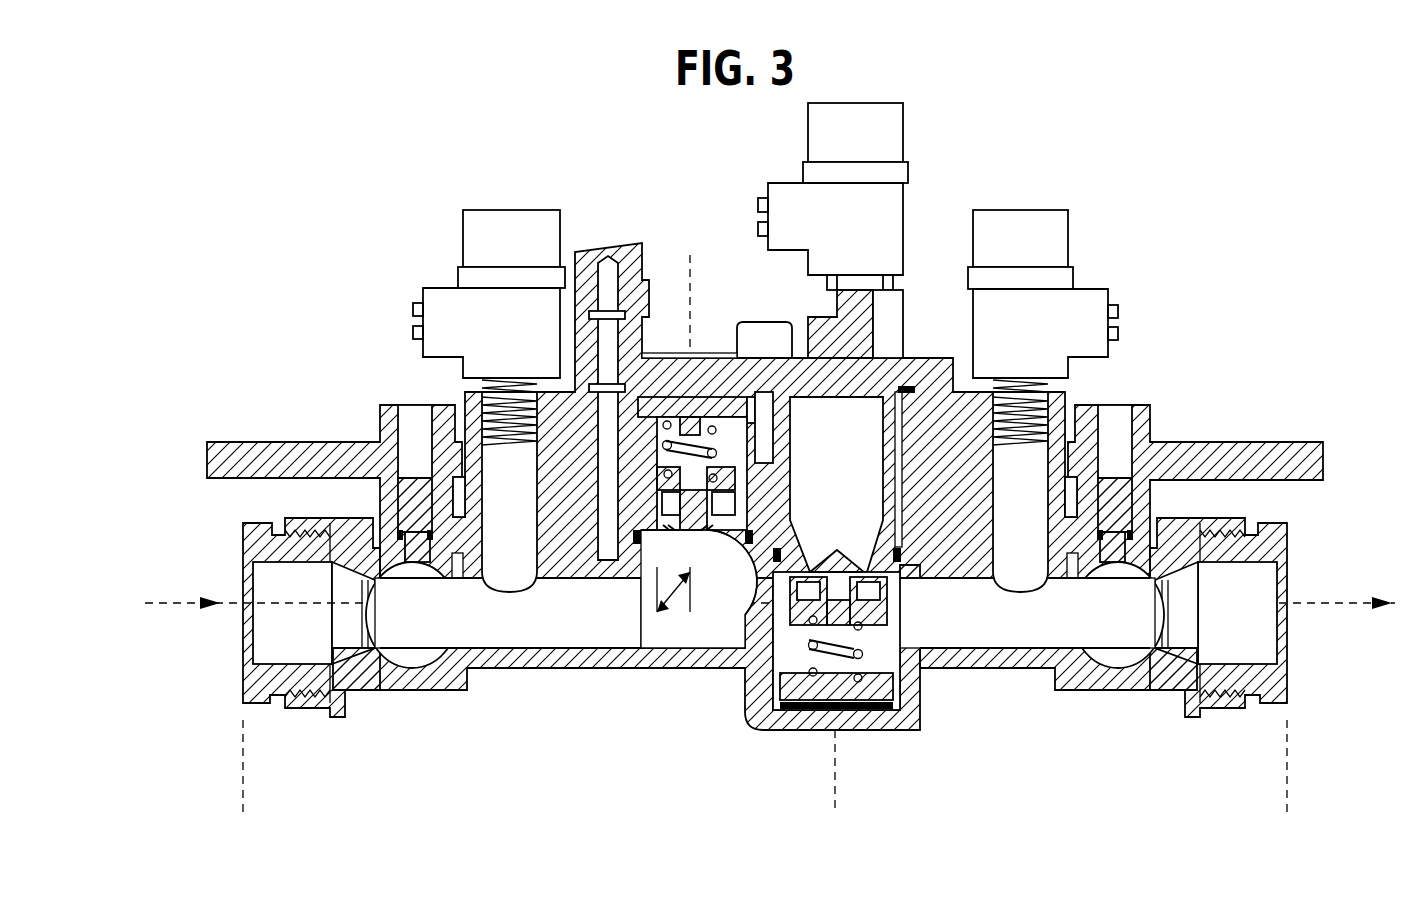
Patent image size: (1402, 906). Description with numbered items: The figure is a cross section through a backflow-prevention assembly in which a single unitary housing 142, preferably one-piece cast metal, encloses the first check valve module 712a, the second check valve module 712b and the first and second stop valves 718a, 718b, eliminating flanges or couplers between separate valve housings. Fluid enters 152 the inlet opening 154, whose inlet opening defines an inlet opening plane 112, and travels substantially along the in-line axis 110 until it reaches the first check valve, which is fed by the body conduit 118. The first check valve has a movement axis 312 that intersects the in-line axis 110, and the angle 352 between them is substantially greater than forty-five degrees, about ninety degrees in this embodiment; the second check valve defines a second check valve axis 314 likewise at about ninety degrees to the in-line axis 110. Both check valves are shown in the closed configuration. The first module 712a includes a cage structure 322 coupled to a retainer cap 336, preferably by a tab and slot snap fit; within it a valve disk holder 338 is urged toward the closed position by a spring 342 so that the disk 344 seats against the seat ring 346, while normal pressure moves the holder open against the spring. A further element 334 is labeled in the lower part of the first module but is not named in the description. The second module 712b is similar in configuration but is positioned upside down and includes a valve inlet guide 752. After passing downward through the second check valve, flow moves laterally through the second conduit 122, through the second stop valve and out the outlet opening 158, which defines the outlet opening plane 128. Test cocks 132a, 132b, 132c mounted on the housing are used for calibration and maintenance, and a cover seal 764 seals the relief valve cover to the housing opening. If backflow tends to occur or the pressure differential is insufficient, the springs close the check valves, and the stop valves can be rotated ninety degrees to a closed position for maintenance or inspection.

The in-line axis 110 is at (1330, 606).
The inlet opening plane 112 is at (243, 773).
The body conduit 118 is at (569, 641).
The second conduit 122 is at (1002, 641).
The outlet opening plane 128 is at (1287, 747).
The test cock 132a is at (485, 228).
The test cock 132b is at (885, 120).
The test cock 132c is at (1045, 226).
The housing 142 is at (512, 662).
The fluid entry 152 is at (186, 602).
The inlet opening 154 is at (240, 565).
The outlet opening 158 is at (1290, 566).
The first check valve movement axis 312 is at (692, 335).
The second check valve axis 314 is at (840, 777).
The cage structure 322 is at (765, 720).
The valve seat 334 is at (655, 545).
The retainer cap 336 is at (662, 410).
The valve disk holder 338 is at (652, 490).
The spring 342 is at (718, 458).
The disk 344 is at (718, 545).
The seat ring 346 is at (755, 540).
The angle 352 is at (688, 650).
The first check valve module 712a is at (655, 545).
The second check valve module 712b is at (895, 715).
The first stop valve 718a is at (432, 662).
The second stop valve 718b is at (1110, 662).
The valve inlet guide 752 is at (888, 480).
The cover seal 764 is at (913, 392).